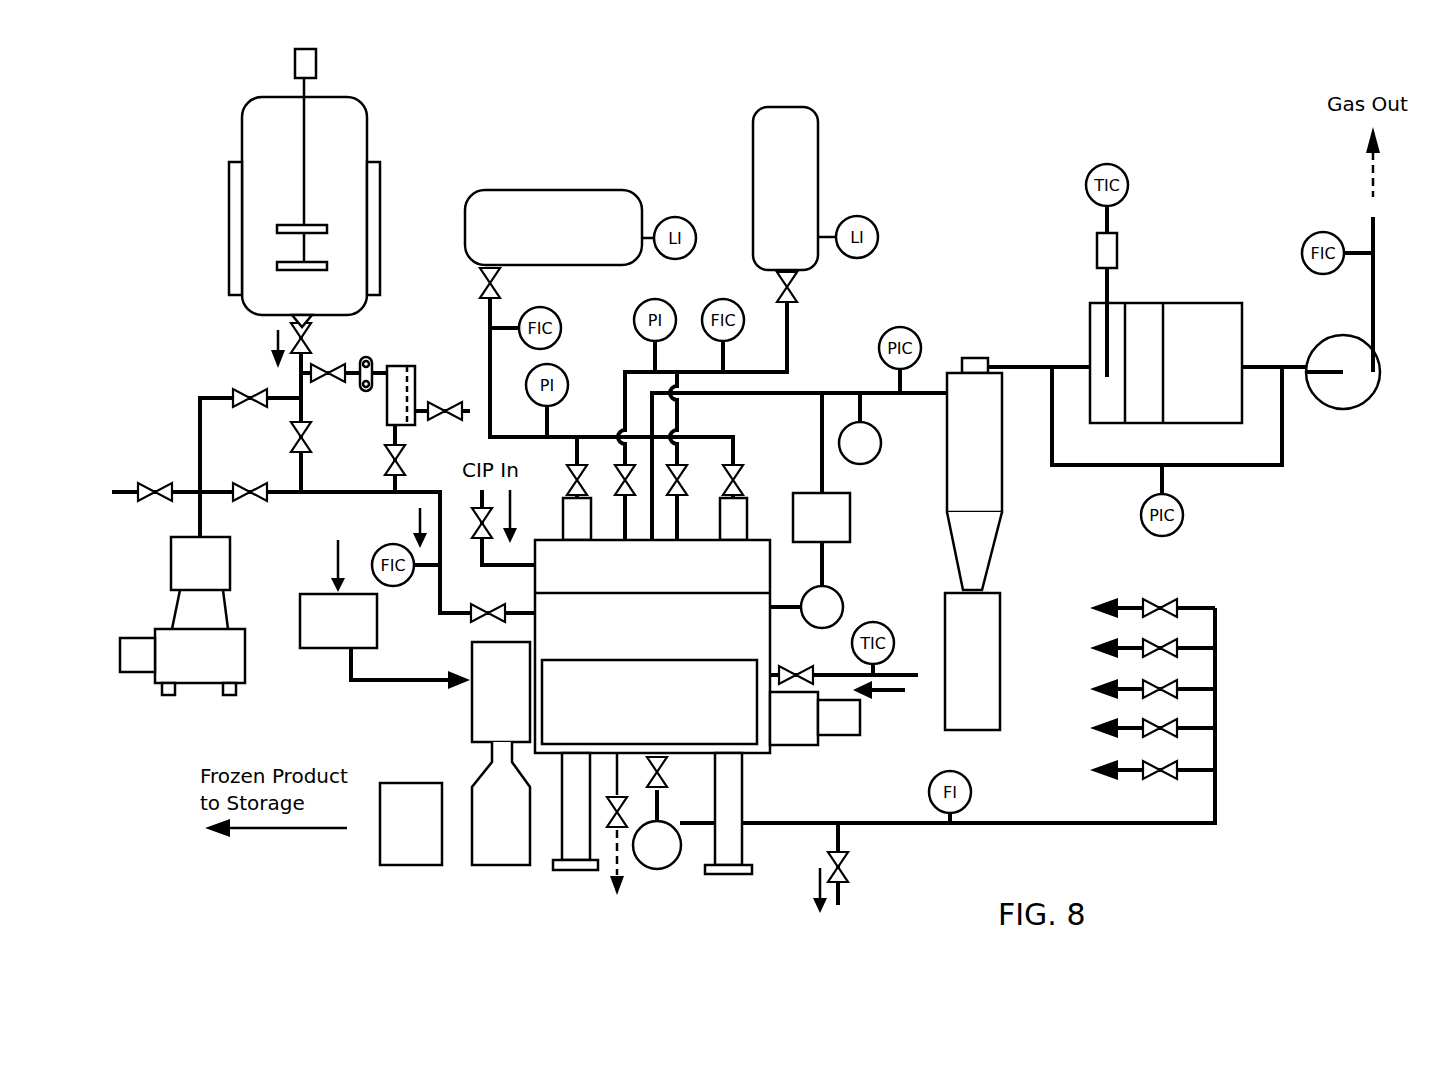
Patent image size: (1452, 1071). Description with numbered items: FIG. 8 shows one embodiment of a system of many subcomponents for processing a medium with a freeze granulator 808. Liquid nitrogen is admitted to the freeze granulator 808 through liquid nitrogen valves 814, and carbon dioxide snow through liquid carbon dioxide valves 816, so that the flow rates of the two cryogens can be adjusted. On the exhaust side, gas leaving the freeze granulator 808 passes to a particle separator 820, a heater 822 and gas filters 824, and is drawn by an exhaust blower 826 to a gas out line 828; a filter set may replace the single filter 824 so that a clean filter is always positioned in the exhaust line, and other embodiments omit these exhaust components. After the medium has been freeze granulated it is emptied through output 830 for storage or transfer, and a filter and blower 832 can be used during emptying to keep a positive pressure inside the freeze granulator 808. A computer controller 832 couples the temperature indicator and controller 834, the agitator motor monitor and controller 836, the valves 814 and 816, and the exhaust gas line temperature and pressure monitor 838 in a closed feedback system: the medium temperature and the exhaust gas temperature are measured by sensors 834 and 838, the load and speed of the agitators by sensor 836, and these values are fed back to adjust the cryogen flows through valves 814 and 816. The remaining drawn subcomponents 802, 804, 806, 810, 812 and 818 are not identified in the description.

The mixing vessel with agitator 802 is at (350, 158).
The pump 804 is at (240, 660).
The filter 806 is at (412, 388).
The freeze granulator 808 is at (762, 760).
The liquid nitrogen tank 810 is at (805, 150).
The liquid carbon dioxide tank 812 is at (600, 200).
The liquid nitrogen valves 814 is at (615, 483).
The liquid carbon dioxide valves 816 is at (575, 484).
The gas exhaust line 818 is at (797, 395).
The particle separator 820 is at (947, 468).
The heater 822 is at (1092, 347).
The gas filter 824 is at (1222, 315).
The exhaust blower 826 is at (1370, 380).
The gas out line 828 is at (1375, 260).
The output 830 is at (510, 862).
The computer controller 832 is at (850, 520).
The temperature indicator and controller 834 is at (843, 603).
The agitator motor monitor and controller 836 is at (840, 738).
The exhaust gas line temperature and pressure monitor 838 is at (858, 465).